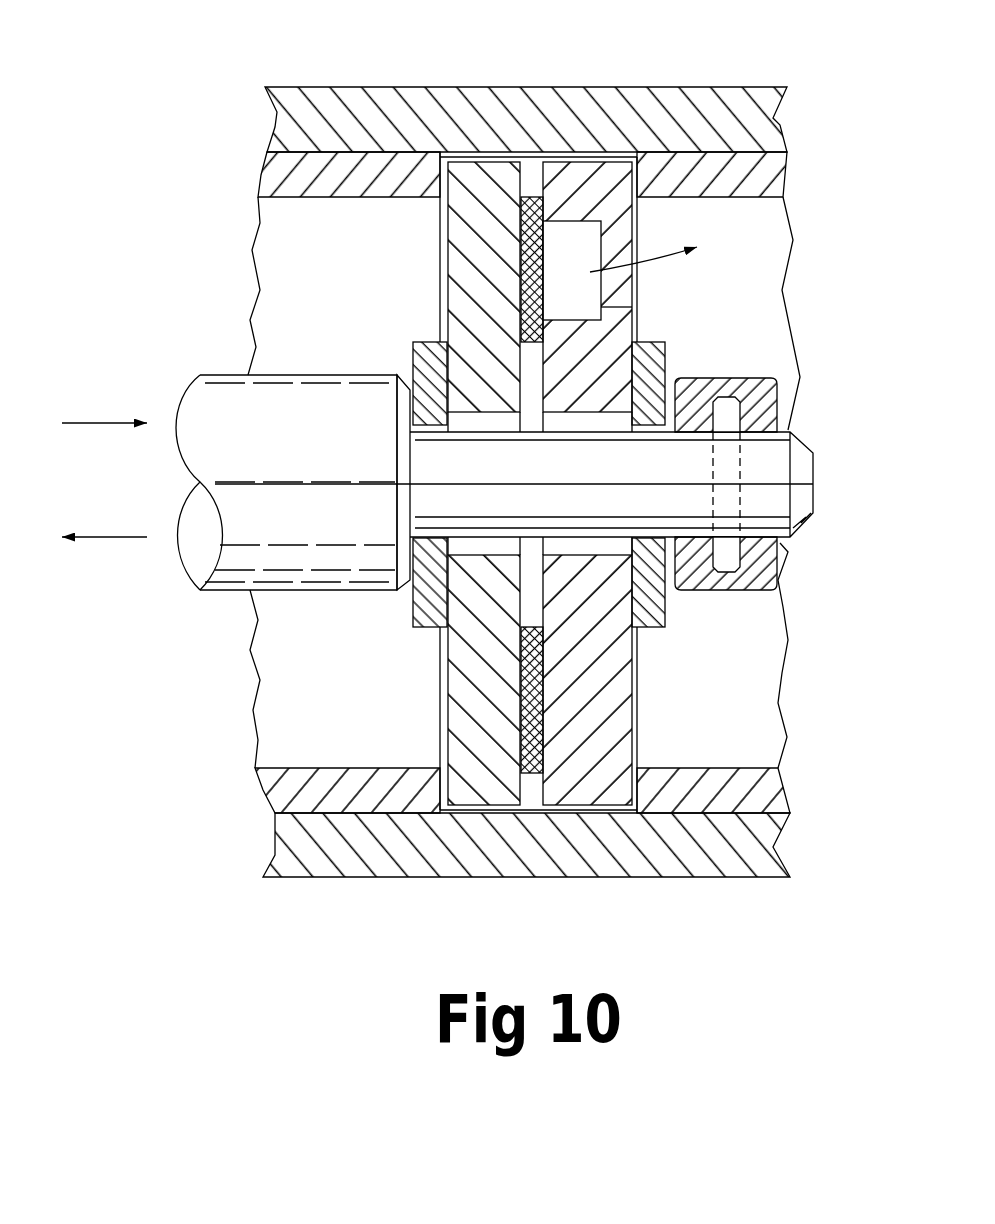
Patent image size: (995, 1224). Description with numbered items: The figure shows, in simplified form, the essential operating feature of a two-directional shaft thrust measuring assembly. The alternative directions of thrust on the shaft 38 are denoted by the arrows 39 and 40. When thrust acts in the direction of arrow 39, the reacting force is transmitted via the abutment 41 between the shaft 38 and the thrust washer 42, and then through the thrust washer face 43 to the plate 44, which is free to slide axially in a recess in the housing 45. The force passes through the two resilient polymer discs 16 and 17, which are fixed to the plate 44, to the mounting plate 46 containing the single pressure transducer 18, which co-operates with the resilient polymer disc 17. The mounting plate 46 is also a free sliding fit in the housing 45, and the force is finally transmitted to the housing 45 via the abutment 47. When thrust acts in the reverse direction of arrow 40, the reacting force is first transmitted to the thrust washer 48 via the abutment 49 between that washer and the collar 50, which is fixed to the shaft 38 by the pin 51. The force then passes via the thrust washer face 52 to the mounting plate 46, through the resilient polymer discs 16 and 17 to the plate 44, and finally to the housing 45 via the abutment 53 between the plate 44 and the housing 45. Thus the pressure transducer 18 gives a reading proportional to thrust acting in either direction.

The resilient polymer disc 16 is at (545, 715).
The resilient polymer disc 17 is at (525, 195).
The pressure transducer 18 is at (587, 252).
The shaft 38 is at (222, 418).
The arrow 39 is at (92, 421).
The arrow 40 is at (122, 540).
The abutment 41 is at (407, 410).
The thrust washer 42 is at (423, 600).
The thrust washer face 43 is at (438, 350).
The plate 44 is at (506, 407).
The housing 45 is at (477, 113).
The mounting plate 46 is at (565, 190).
The abutment 47 is at (647, 172).
The thrust washer 48 is at (655, 353).
The abutment 49 is at (690, 573).
The collar 50 is at (760, 399).
The pin 51 is at (735, 398).
The thrust washer face 52 is at (640, 607).
The abutment 53 is at (440, 790).